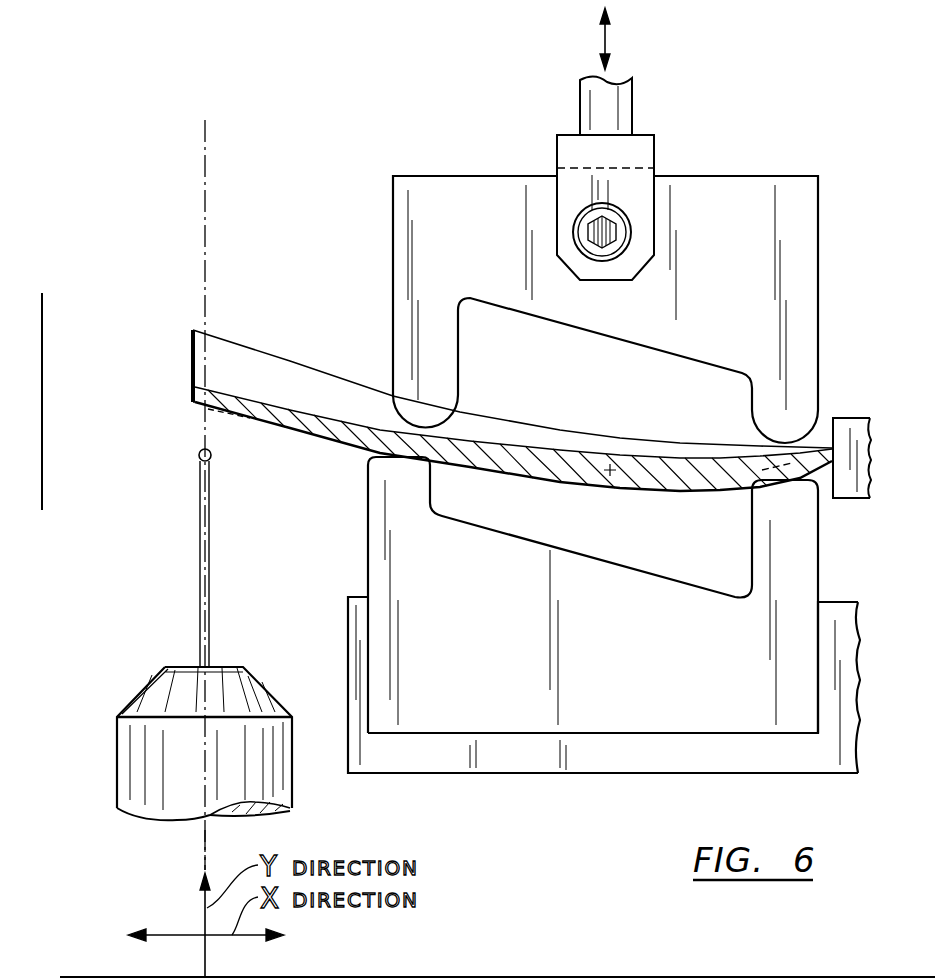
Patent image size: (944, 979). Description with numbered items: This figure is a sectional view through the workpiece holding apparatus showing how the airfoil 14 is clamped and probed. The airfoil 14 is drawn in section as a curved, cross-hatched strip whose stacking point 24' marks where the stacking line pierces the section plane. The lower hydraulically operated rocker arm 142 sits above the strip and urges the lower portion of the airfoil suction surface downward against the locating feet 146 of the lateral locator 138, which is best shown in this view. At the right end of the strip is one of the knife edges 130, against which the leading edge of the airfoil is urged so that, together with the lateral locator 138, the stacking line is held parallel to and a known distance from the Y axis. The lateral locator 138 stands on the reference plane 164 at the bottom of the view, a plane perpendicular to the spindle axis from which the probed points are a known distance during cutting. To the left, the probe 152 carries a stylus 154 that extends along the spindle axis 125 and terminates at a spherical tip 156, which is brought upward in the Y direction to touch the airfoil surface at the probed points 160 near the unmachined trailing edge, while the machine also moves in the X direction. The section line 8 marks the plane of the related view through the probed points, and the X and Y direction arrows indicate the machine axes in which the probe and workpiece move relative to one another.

The section line 8- 8 is at (232, 138).
The airfoil 14 is at (190, 342).
The stacking point 24' is at (513, 439).
The spindle axis 125 is at (200, 836).
The knife edge 130 is at (826, 418).
The lateral locator 138 is at (682, 652).
The lower hydraulically operated rocker arm 142 is at (760, 185).
The locating feet 146 is at (403, 472).
The probe 152 is at (258, 674).
The stylus 154 is at (198, 588).
The spherical tip 156 is at (198, 455).
The cross marks 160 is at (200, 405).
The reference plane 164 is at (368, 977).